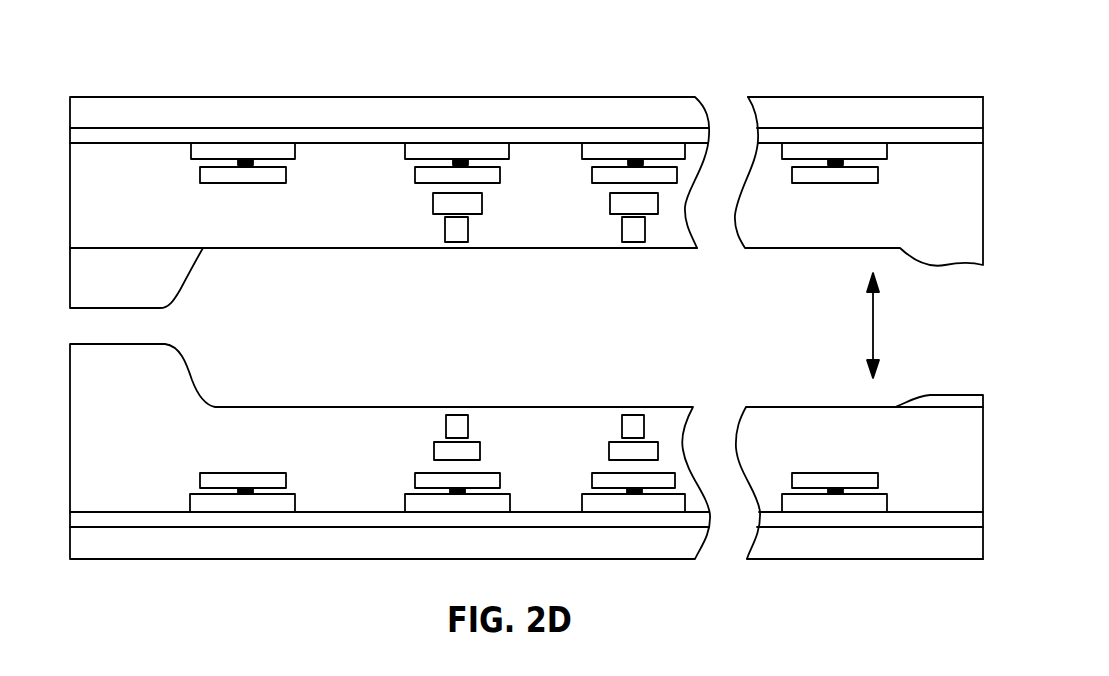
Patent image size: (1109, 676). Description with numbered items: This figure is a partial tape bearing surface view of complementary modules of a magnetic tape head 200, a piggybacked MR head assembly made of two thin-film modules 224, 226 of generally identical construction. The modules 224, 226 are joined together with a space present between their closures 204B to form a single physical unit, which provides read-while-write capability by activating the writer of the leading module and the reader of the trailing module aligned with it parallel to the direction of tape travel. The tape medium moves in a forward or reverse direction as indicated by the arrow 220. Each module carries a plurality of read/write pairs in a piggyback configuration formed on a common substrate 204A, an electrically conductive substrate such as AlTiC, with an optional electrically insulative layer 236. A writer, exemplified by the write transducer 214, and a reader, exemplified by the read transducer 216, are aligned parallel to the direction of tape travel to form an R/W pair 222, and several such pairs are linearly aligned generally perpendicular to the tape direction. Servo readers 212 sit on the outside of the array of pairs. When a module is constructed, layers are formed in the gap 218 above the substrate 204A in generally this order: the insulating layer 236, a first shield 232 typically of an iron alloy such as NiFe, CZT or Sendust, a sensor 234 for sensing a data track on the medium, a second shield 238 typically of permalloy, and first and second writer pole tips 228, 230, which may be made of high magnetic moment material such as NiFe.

The magnetic tape head 200 is at (445, 80).
The common substrate 204A is at (222, 124).
The closure 204B is at (187, 287).
The gap 218 is at (293, 248).
The thin-film module 224 is at (898, 97).
The arrow 220 is at (873, 332).
The R/W pair 222 is at (468, 380).
The servo reader 212 is at (291, 465).
The second writer pole tip 230 is at (443, 420).
The first writer pole tip 228 is at (434, 452).
The second shield 238 is at (401, 487).
The sensor 234 is at (415, 478).
The first shield 232 is at (405, 503).
The write transducer 214 is at (545, 451).
The read transducer 216 is at (565, 497).
The electrically insulative layer 236 is at (975, 502).
The thin-film module 226 is at (882, 559).